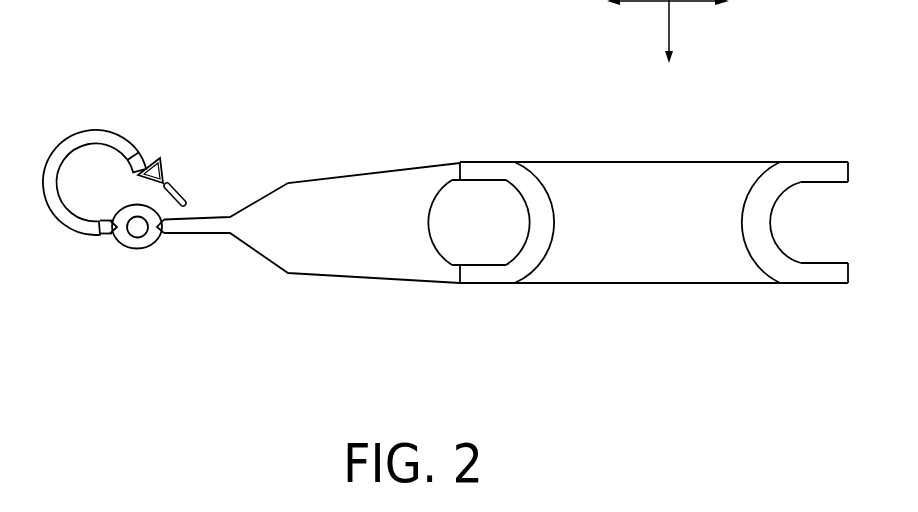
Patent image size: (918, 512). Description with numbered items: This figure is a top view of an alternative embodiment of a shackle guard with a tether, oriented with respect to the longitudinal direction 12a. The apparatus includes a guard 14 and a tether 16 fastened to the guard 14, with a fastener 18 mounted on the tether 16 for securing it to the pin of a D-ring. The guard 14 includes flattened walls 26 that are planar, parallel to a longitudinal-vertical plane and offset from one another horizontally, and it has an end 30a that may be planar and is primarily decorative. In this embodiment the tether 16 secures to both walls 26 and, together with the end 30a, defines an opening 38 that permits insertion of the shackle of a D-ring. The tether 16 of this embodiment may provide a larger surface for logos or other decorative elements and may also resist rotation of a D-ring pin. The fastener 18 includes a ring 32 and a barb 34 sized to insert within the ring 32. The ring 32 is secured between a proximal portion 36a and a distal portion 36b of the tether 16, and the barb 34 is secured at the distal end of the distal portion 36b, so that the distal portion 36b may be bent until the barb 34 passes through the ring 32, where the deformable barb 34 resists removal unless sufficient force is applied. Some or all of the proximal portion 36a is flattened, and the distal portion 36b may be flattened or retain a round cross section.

The longitudinal direction 12a is at (713, 0).
The guard 14 is at (622, 216).
The tether 16 is at (312, 202).
The fastener 18 is at (113, 179).
The flattened walls 26 is at (552, 162).
The end 30a is at (475, 225).
The ring 32 is at (138, 242).
The barb 34 is at (162, 160).
The proximal portion 36a is at (326, 242).
The distal portion 36b is at (62, 155).
The opening 38 is at (455, 236).